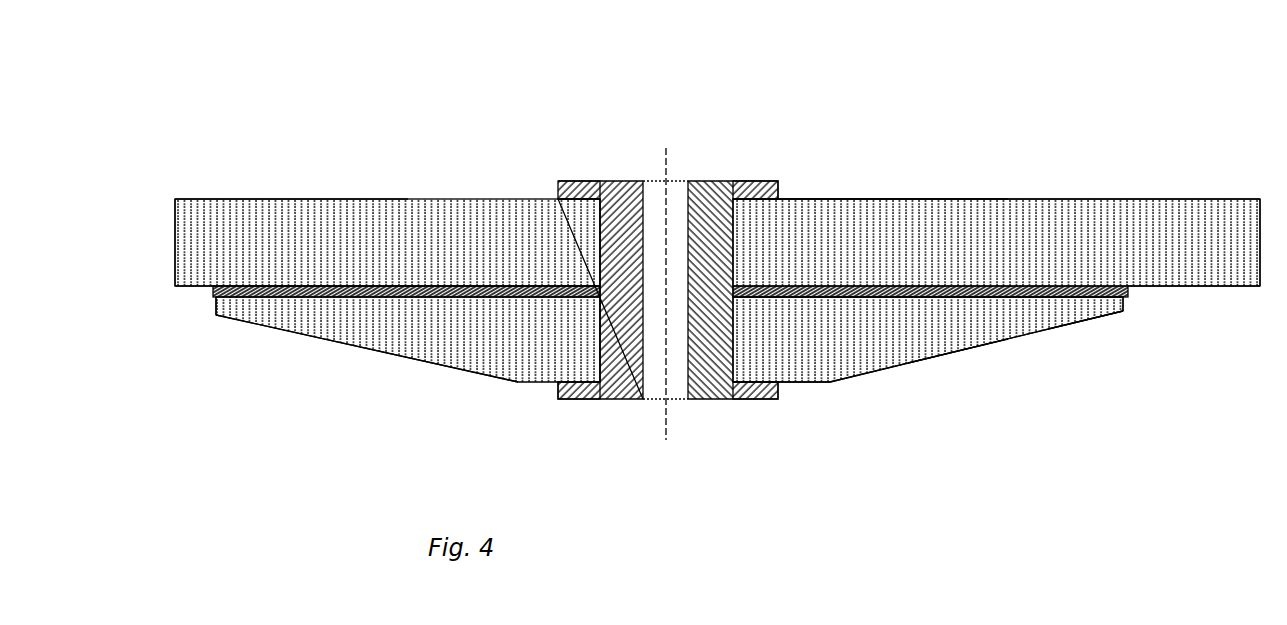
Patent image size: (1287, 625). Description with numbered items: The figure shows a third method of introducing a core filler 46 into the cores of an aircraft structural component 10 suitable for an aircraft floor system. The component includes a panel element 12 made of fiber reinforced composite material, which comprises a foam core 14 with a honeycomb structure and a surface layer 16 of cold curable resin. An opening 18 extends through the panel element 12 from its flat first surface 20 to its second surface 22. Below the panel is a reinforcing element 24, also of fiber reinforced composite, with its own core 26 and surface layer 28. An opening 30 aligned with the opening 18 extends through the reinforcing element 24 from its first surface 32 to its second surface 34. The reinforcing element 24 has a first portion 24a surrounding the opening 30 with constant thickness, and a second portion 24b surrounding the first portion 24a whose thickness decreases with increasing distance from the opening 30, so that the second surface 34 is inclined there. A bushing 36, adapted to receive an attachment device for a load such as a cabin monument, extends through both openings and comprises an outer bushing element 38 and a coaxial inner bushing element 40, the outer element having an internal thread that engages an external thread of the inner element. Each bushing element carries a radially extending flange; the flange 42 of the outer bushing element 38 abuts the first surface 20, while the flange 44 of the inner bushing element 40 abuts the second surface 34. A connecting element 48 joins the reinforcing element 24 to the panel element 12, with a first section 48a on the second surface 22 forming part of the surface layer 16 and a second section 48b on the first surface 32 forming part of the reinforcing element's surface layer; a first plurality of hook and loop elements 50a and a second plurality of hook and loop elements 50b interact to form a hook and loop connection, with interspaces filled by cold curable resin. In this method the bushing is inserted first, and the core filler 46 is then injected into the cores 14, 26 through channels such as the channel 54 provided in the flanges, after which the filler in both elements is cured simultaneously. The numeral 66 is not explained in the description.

The aircraft structural component 10 is at (965, 95).
The panel element 12 is at (1088, 213).
The core 14 is at (1158, 205).
The surface layer 16 is at (1252, 208).
The opening 18 is at (715, 172).
The first surface 20 is at (835, 191).
The second surface 22 is at (1170, 285).
The reinforcing element 24 is at (836, 376).
The first portion 24a is at (788, 376).
The second portion 24b is at (990, 330).
The core 26 is at (935, 340).
The surface layer 28 is at (1025, 330).
The opening 30 is at (698, 393).
The first surface 32 is at (1107, 305).
The second surface 34 is at (1075, 310).
The bushing 36 is at (592, 152).
The outer bushing element 38 is at (600, 172).
The inner bushing element 40 is at (622, 172).
The flange 42 is at (565, 173).
The flange 44 is at (560, 393).
The core filler 46 is at (762, 172).
The connecting element 48 is at (178, 292).
The first section 48a is at (218, 275).
The second section 48b is at (226, 312).
The hook and loop elements 50a is at (272, 278).
The hook and loop elements 50b is at (290, 303).
The channel 54 is at (585, 173).
The lower right flange 66 is at (590, 393).